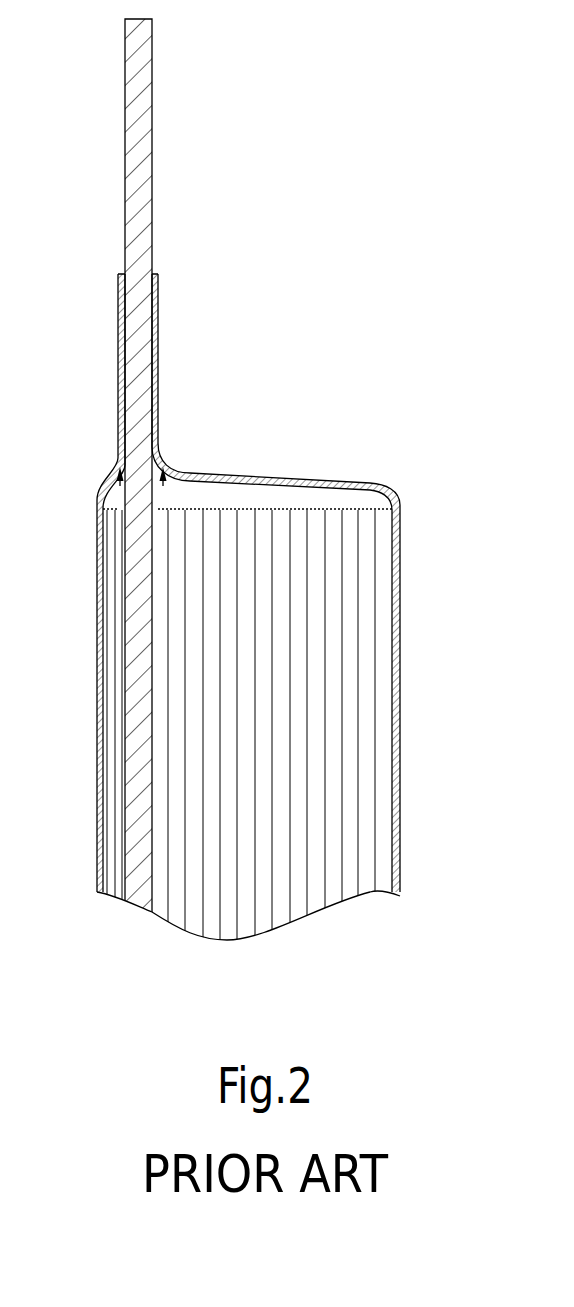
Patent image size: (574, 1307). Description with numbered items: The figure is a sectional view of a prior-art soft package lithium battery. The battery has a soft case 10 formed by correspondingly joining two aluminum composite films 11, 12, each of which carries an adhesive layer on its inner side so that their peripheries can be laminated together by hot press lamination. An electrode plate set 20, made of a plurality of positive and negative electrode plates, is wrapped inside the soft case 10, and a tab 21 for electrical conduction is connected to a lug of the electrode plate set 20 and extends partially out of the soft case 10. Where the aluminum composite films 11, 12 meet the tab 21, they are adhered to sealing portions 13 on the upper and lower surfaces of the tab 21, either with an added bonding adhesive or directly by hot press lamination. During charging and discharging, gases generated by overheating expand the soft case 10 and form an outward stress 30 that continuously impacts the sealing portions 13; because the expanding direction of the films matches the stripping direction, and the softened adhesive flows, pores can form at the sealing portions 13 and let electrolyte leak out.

The soft case 10 is at (394, 482).
The aluminum composite film 11 is at (97, 550).
The aluminum composite film 12 is at (400, 695).
The sealing portion 13 is at (117, 461).
The electrode plate set 20 is at (247, 898).
The tab 21 is at (150, 106).
The outward stress 30 is at (120, 503).